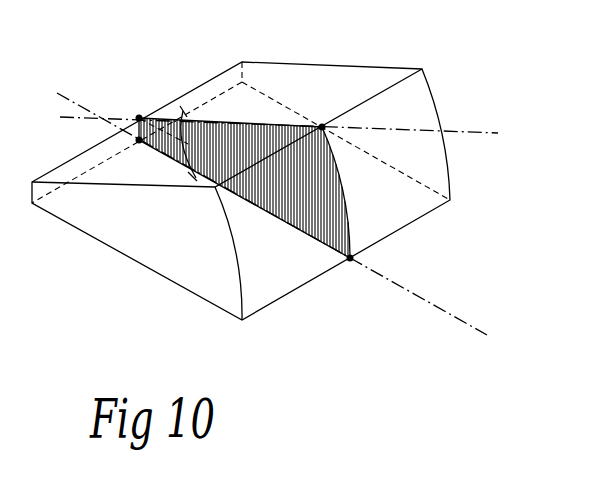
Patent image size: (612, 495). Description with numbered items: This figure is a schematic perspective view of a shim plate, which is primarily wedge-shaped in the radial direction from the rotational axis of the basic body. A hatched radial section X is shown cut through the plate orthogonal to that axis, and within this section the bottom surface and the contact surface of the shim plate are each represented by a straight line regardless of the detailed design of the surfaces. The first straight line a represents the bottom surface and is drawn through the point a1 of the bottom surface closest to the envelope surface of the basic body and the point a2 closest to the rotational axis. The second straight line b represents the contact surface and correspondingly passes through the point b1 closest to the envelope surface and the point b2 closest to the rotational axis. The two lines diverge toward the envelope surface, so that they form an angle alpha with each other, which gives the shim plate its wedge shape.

The point of the bottom surface closest to the envelope surface a1 is at (322, 127).
The point of the bottom surface closest to the rotational axis a2 is at (139, 117).
The point of the contact surface closest to the envelope surface b1 is at (350, 262).
The point of the contact surface closest to the rotational axis b2 is at (139, 140).
The straight line representing the bottom surface a is at (290, 132).
The straight line representing the contact surface b is at (279, 223).
The radial section is at (244, 188).